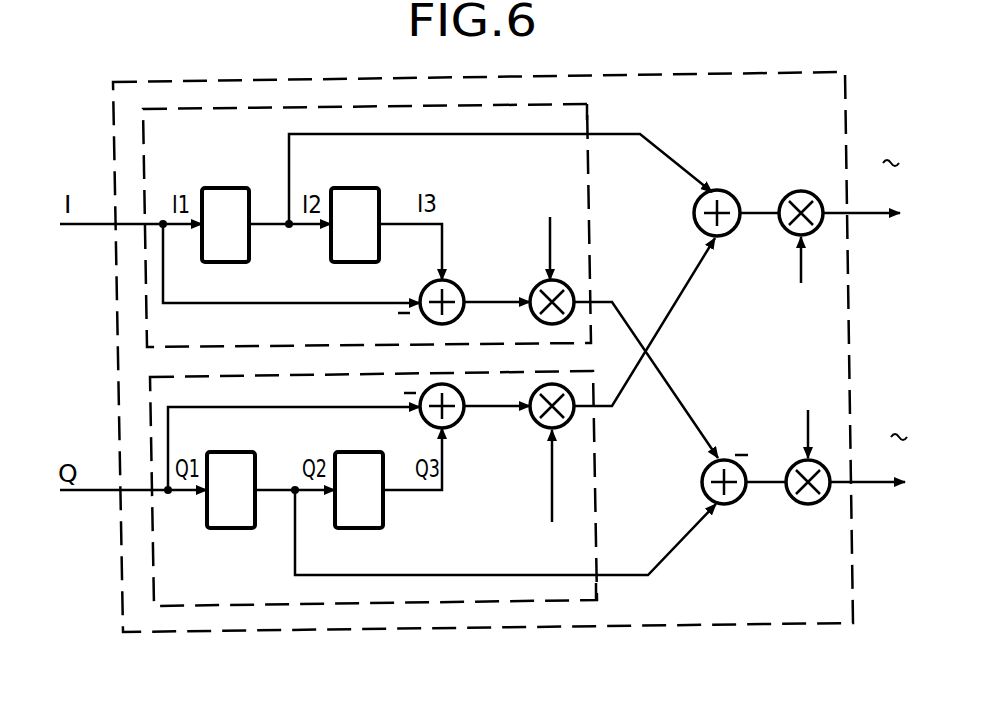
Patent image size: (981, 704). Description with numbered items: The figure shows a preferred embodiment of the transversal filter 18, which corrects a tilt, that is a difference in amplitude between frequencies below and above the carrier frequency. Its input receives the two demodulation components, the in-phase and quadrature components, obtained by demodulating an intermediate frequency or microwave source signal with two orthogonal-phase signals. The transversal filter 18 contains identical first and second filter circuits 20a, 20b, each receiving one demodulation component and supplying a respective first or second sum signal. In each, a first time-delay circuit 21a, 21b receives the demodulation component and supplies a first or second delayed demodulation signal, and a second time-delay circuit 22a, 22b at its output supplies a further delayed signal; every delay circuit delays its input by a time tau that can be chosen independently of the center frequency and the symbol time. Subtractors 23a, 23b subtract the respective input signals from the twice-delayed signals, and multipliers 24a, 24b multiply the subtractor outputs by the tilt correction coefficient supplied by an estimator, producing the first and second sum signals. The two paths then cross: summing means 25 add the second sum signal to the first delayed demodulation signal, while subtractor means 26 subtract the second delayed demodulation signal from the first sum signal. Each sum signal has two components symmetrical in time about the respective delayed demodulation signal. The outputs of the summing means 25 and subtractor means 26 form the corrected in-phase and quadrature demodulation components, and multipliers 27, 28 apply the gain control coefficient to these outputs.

The transversal filter 18 is at (295, 79).
The first filter circuit 20a is at (589, 119).
The second filter circuit 20b is at (598, 585).
The first time-delay circuit 21a is at (227, 193).
The second time-delay circuit 22a is at (353, 193).
The subtractor 23a is at (427, 286).
The multiplier 24a is at (538, 289).
The first time-delay circuit 21b is at (228, 461).
The second time-delay circuit 22b is at (355, 461).
The subtractor 23b is at (459, 421).
The multiplier 24b is at (538, 429).
The summing means 25 is at (735, 190).
The subtractor means 26 is at (746, 497).
The multiplier 27 is at (798, 191).
The multiplier 28 is at (812, 505).